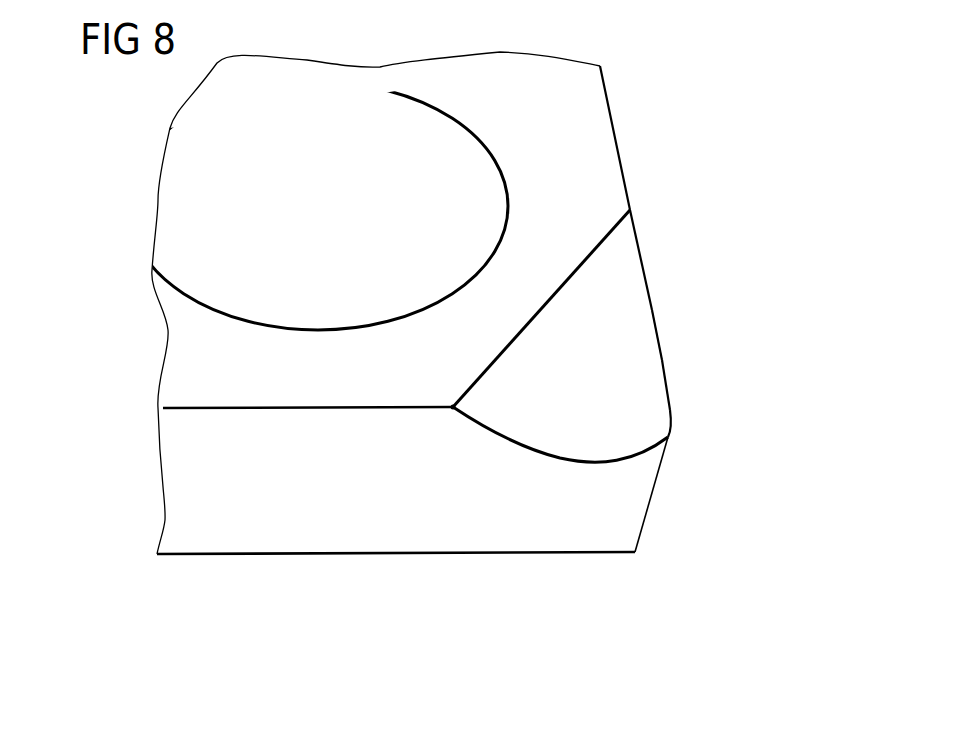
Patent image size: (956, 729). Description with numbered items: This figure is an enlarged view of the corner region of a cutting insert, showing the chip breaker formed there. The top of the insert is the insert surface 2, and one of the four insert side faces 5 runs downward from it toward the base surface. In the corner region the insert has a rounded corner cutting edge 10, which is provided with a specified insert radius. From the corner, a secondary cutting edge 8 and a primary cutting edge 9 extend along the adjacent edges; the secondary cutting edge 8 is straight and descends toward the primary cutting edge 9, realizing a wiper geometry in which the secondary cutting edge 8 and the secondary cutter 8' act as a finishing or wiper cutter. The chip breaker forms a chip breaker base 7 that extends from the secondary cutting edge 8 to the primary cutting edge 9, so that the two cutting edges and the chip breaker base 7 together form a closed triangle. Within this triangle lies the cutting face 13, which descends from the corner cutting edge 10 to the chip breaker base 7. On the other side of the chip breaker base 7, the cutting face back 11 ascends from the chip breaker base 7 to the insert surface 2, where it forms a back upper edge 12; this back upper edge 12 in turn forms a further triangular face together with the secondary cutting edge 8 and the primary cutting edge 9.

The insert surface 2 is at (580, 178).
The insert side face 5 is at (380, 498).
The chip breaker base 7 is at (620, 350).
The secondary cutting edge 8 is at (670, 260).
The secondary cutter 8' is at (710, 357).
The primary cutting edge 9 is at (522, 445).
The corner cutting edge 10 is at (670, 438).
The cutting face back 11 is at (546, 372).
The back upper edge 12 is at (478, 378).
The cutting face 13 is at (652, 423).